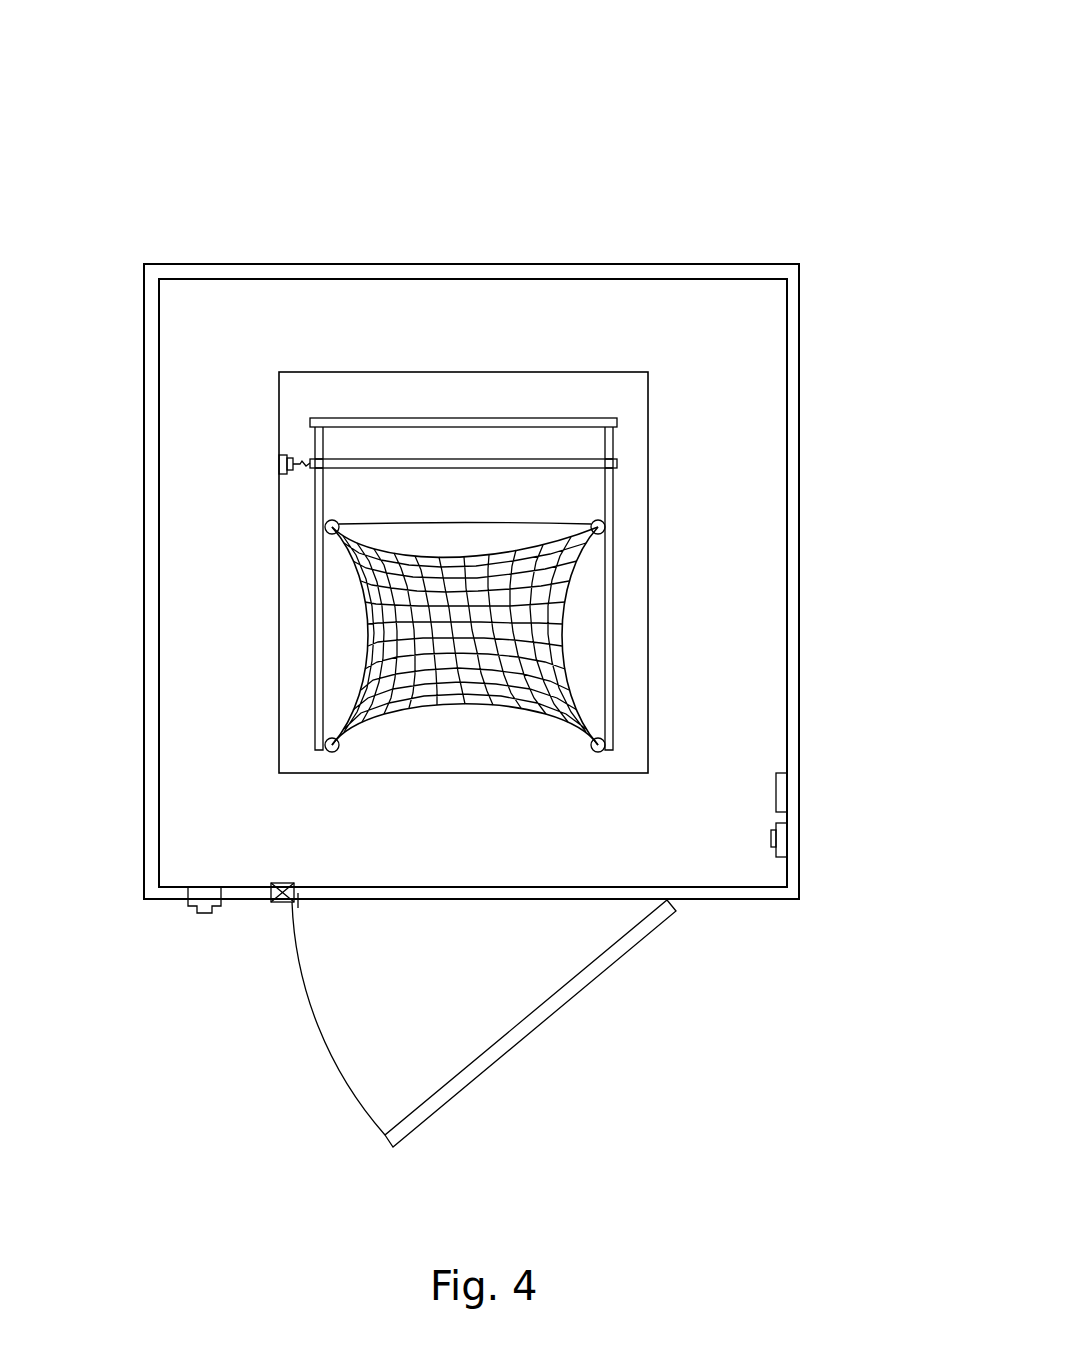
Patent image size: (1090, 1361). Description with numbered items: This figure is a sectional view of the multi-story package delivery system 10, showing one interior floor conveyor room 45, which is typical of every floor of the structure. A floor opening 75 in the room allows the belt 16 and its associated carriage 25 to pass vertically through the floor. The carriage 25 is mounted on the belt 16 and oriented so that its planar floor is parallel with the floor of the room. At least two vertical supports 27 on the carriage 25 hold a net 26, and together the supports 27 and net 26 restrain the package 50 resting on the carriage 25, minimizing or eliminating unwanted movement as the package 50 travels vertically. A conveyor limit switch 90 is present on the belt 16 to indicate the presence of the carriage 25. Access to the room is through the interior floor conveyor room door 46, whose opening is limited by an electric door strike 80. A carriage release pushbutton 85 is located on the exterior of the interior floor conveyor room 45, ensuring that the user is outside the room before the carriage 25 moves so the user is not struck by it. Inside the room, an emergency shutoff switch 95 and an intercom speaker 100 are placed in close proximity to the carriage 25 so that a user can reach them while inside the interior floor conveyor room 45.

The multi-story package delivery system 10 is at (106, 175).
The belt 16 is at (390, 463).
The carriage 25 is at (508, 490).
The net 26 is at (353, 600).
The vertical supports 27 is at (605, 527).
The interior floor conveyor room 45 is at (715, 408).
The interior floor conveyor room door 46 is at (587, 984).
The package 50 is at (433, 633).
The floor opening 75 is at (598, 392).
The electric door strike 80 is at (275, 902).
The carriage release pushbutton 85 is at (188, 907).
The conveyor limit switch 90 is at (279, 462).
The emergency shutoff switch 95 is at (782, 838).
The intercom speaker 100 is at (778, 792).